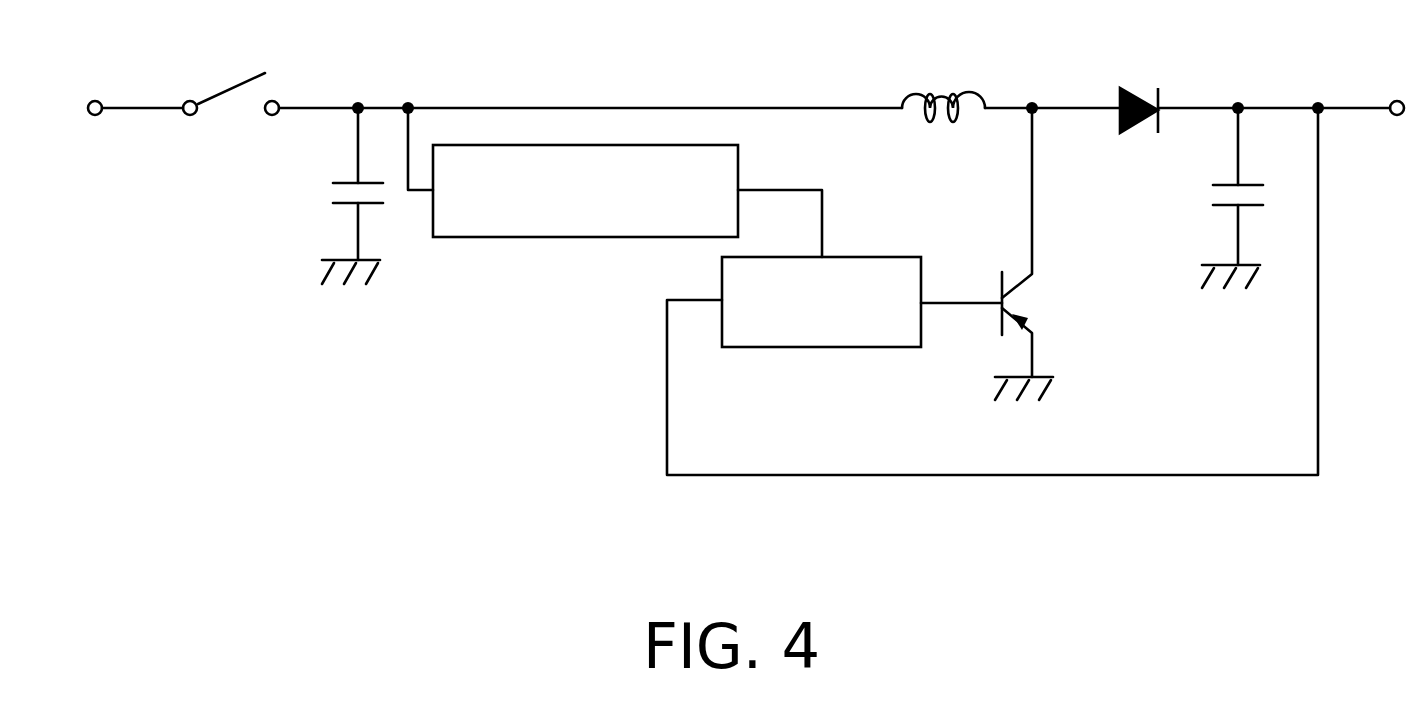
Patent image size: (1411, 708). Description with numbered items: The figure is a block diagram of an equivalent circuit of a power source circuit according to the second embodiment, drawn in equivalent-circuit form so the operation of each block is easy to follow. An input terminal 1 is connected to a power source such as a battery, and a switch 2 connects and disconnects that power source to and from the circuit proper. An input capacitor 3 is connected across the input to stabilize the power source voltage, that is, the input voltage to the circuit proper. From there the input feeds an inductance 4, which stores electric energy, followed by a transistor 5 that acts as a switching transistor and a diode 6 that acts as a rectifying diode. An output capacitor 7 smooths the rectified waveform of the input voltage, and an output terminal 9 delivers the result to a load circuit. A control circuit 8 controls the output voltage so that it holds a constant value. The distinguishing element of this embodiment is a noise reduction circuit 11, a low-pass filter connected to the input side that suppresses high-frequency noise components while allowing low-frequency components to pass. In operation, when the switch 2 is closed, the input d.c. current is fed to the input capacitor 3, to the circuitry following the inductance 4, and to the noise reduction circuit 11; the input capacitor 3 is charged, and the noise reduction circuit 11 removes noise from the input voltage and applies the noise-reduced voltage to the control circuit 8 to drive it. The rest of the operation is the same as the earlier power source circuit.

The input terminal 1 is at (95, 116).
The switch 2 is at (230, 110).
The input capacitor 3 is at (332, 192).
The inductance 4 is at (943, 92).
The transistor 5 is at (1012, 342).
The diode 6 is at (1143, 123).
The output capacitor 7 is at (1227, 217).
The control circuit 8 is at (840, 348).
The output terminal 9 is at (1400, 123).
The noise reduction circuit 11 is at (542, 238).